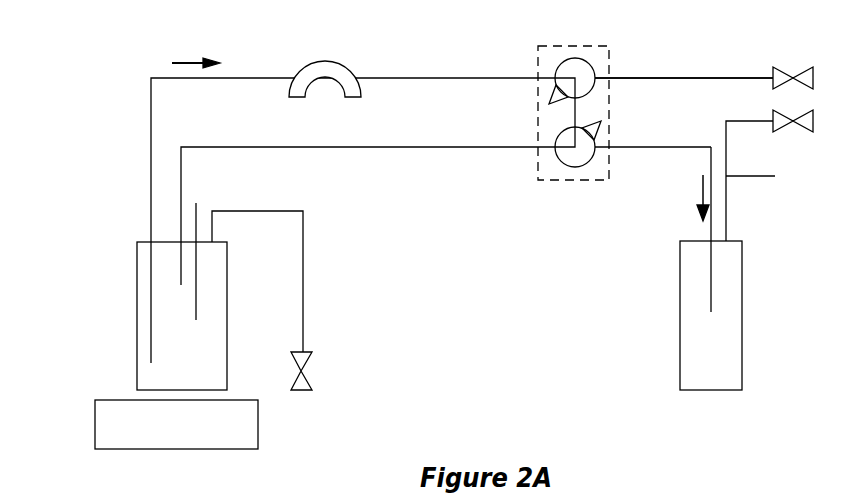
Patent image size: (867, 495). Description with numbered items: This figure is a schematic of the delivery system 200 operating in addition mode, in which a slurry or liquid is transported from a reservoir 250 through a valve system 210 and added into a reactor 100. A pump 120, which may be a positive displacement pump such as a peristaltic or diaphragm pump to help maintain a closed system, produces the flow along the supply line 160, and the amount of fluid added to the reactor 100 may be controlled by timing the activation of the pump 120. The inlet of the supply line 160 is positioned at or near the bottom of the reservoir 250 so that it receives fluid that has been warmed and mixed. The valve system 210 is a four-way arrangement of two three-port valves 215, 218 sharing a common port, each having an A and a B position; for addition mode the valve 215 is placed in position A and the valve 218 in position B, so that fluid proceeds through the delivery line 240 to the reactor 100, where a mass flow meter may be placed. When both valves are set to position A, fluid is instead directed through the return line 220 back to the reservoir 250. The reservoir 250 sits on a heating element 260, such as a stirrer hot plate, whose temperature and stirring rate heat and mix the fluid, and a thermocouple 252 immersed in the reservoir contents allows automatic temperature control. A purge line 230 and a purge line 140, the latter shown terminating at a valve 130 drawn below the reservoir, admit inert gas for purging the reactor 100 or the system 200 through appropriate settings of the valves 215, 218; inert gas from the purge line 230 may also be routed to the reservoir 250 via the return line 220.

The delivery system 200 is at (78, 39).
The reactor 100 is at (680, 290).
The pump 120 is at (317, 62).
The valve 130 is at (306, 370).
The purge line 140 is at (303, 286).
The supply line 160 is at (151, 179).
The valve system 210 is at (576, 109).
The three-port valve 215 is at (561, 62).
The three-port valve 218 is at (562, 161).
The return line 220 is at (448, 146).
The purge line 230 is at (645, 79).
The delivery line 240 is at (685, 149).
The reservoir 250 is at (137, 317).
The thermocouple 252 is at (196, 203).
The heating element 260 is at (258, 428).